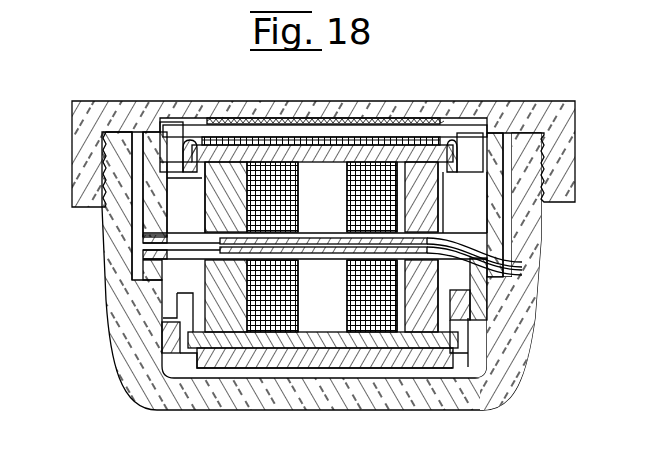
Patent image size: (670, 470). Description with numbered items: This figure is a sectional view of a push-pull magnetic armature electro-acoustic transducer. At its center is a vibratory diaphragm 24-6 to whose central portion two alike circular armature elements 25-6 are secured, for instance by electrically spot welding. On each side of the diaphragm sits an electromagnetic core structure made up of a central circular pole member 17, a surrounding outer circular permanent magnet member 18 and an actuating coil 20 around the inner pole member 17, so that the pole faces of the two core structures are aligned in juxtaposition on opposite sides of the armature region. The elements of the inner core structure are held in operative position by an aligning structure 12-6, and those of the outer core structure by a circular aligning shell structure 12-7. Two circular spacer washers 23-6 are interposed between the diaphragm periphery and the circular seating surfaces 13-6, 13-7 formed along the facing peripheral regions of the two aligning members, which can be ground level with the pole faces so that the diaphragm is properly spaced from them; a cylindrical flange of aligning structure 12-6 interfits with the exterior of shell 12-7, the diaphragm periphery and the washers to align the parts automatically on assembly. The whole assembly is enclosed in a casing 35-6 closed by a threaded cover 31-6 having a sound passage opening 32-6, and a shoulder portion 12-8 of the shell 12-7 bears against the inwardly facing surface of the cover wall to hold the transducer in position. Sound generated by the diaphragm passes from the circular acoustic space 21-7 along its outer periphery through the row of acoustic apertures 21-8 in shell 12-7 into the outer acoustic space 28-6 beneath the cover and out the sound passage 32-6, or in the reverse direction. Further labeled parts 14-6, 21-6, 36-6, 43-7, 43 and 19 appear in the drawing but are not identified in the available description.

The threaded cover 31-6 is at (128, 93).
The aligning structure 12-6 is at (145, 371).
The circular aligning shell structure 12-7 is at (155, 195).
The shoulder portion 12-8 is at (501, 148).
The circular seating surface 13-7 is at (150, 236).
The circular seating surface 13-6 is at (145, 262).
The shoulder 14-6 is at (135, 276).
The circular acoustic space 21-7 is at (177, 197).
The acoustic apertures 21-8 is at (183, 165).
The bobbin wall 21-6 is at (170, 312).
The upper plate 36-6 is at (315, 190).
The outer acoustic space 28-6 is at (238, 124).
The sound passage opening 32-6 is at (354, 142).
The upper pole plate 43-7 is at (385, 155).
The lower pole plate 43 is at (408, 360).
The outer circular permanent magnet member 18 is at (221, 182).
The upper coil 19 is at (264, 175).
The actuating coil 20 is at (360, 152).
The central circular pole member 17 is at (342, 150).
The circular spacer washer 23-6 is at (527, 250).
The circular armature element 25-6 is at (522, 272).
The vibratory diaphragm 24-6 is at (192, 290).
The casing 35-6 is at (132, 353).